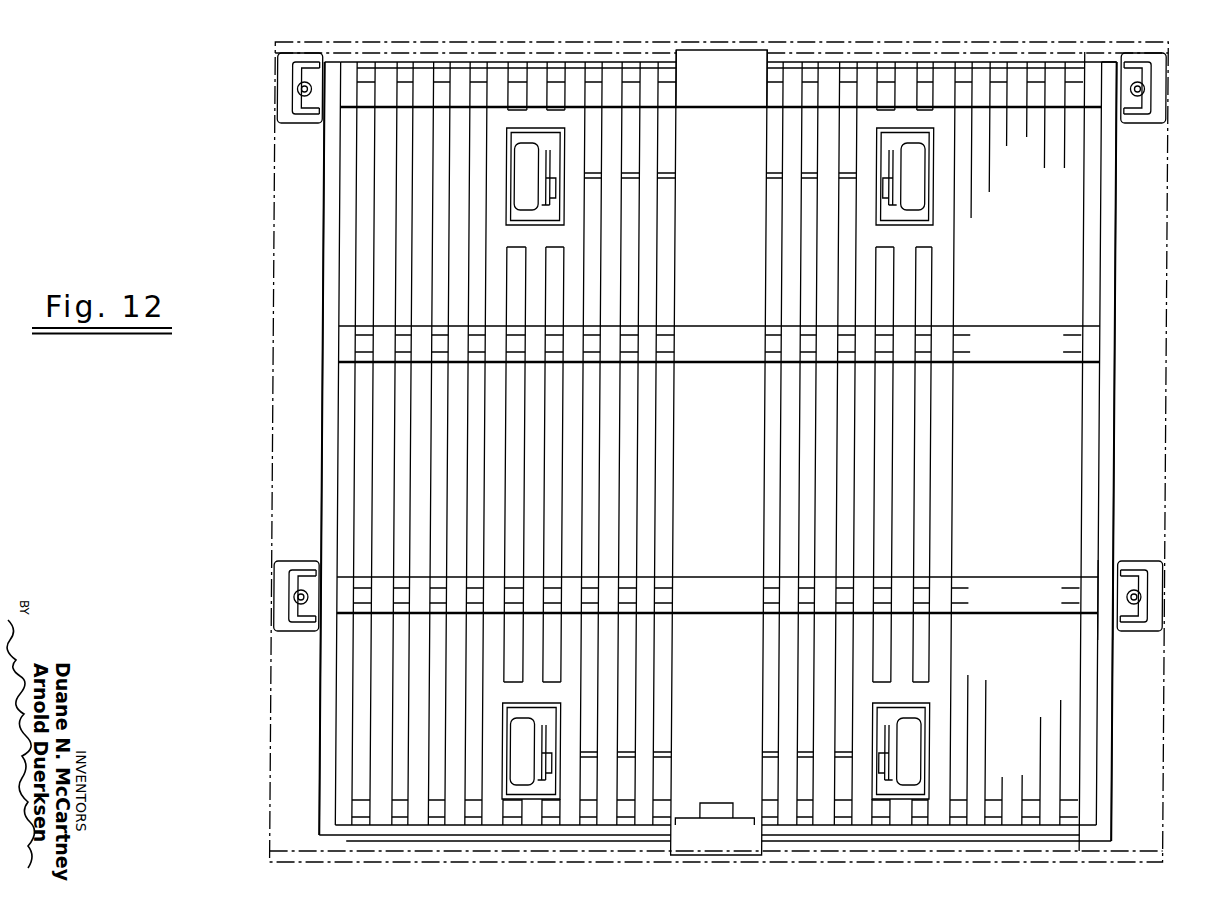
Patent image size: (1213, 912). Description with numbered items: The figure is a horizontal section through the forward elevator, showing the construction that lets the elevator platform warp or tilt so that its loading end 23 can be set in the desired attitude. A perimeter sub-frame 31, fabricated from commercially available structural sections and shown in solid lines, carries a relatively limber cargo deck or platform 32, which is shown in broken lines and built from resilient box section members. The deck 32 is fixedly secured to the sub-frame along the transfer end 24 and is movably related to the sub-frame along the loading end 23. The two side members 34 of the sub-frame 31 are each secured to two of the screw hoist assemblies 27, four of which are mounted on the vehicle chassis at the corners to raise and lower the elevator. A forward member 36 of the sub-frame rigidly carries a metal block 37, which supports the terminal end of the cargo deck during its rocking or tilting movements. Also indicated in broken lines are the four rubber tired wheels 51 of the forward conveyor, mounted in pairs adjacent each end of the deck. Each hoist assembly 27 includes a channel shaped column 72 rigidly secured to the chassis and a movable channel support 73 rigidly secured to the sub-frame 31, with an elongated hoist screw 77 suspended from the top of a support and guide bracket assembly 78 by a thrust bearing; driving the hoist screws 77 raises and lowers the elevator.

The loading end 23 is at (835, 862).
The transfer end 24 is at (614, 42).
The screw hoist assembly 27 is at (278, 89).
The perimeter sub-frame 31 is at (326, 458).
The cargo deck 32 is at (373, 416).
The side member 34 is at (323, 226).
The forward member 36 is at (681, 830).
The metal block 37 is at (716, 806).
The rubber tired wheel 51 is at (527, 723).
The channel shaped column 72 is at (1160, 578).
The movable channel support 73 is at (1115, 576).
The hoist screw 77 is at (1145, 595).
The support and guide bracket assembly 78 is at (1148, 602).